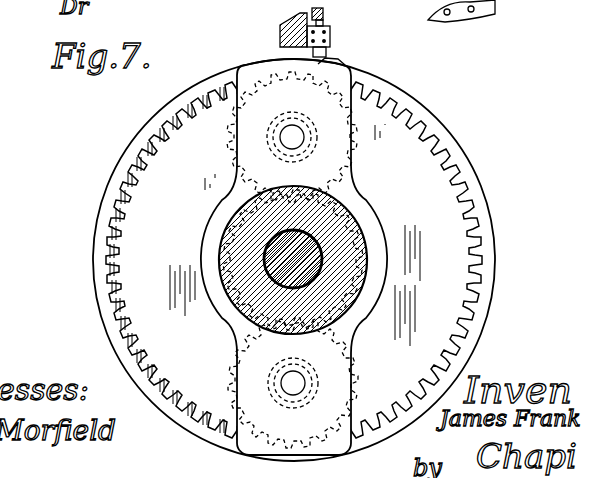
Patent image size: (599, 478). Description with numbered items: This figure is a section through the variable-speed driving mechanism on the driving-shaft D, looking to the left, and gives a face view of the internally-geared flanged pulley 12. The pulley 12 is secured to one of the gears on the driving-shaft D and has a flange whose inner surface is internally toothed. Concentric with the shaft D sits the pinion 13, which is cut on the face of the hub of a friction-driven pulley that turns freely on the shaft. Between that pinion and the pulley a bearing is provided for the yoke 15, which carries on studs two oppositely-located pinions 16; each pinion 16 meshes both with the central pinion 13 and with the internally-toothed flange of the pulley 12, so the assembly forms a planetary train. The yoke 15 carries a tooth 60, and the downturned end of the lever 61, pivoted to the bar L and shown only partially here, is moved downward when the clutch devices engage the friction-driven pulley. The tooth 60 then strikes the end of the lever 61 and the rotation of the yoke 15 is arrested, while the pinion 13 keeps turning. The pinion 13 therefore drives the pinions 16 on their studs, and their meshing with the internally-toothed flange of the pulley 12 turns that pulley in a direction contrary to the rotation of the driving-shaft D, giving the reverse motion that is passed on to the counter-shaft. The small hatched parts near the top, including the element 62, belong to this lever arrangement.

The internally-geared flanged pulley 12 is at (103, 263).
The pinion 13 is at (307, 228).
The yoke 15 is at (333, 137).
The pinion 16 is at (233, 137).
The tooth 60 is at (330, 62).
The lever 61 is at (323, 13).
The pin body 62 is at (330, 35).
The driving-shaft D is at (300, 260).
The bar L is at (280, 29).